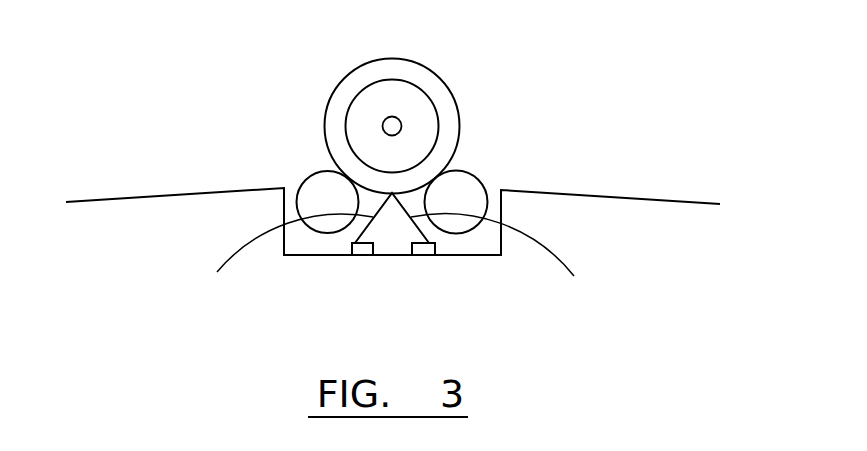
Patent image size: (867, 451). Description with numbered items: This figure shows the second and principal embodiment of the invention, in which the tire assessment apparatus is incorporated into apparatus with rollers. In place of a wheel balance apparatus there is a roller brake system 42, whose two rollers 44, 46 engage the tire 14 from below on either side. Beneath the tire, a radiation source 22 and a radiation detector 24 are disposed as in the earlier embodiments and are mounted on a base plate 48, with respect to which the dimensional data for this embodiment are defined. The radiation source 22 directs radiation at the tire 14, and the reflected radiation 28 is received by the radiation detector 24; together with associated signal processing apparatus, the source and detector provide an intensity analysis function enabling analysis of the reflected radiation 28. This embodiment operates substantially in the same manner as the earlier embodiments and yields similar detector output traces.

The tire 14 is at (448, 87).
The radiation source 22 is at (360, 250).
The radiation detector 24 is at (423, 252).
The reflected radiation 28 is at (394, 261).
The roller brake system 42 is at (480, 143).
The roller 44 is at (473, 187).
The roller 46 is at (315, 183).
The base plate 48 is at (390, 256).